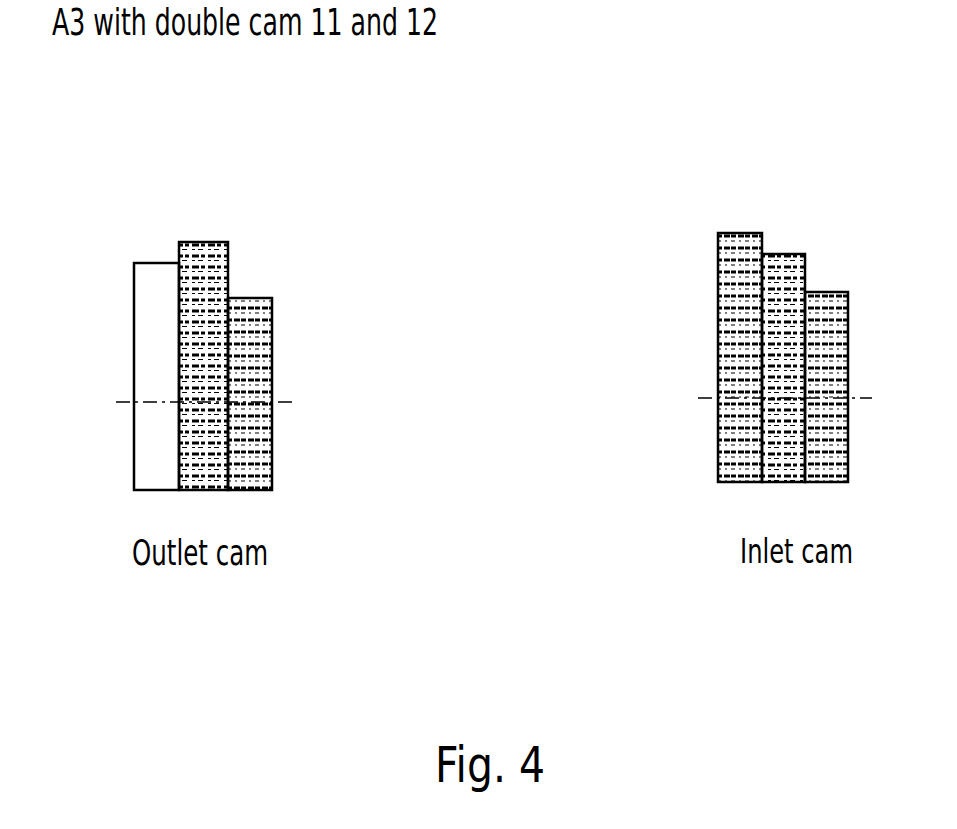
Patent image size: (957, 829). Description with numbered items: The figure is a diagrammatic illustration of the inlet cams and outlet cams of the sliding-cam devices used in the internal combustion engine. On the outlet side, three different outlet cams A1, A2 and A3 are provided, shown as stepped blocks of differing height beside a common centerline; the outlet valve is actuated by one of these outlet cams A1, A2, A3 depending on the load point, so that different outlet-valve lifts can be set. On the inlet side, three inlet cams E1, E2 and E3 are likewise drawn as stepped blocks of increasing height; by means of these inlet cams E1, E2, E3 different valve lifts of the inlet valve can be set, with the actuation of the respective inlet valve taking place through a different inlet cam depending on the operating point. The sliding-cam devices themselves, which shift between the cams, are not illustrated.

The outlet cam A3 is at (167, 53).
The outlet cam A2 is at (209, 217).
The outlet cam A1 is at (267, 276).
The inlet cam E3 is at (717, 212).
The inlet cam E2 is at (787, 230).
The inlet cam E1 is at (854, 278).